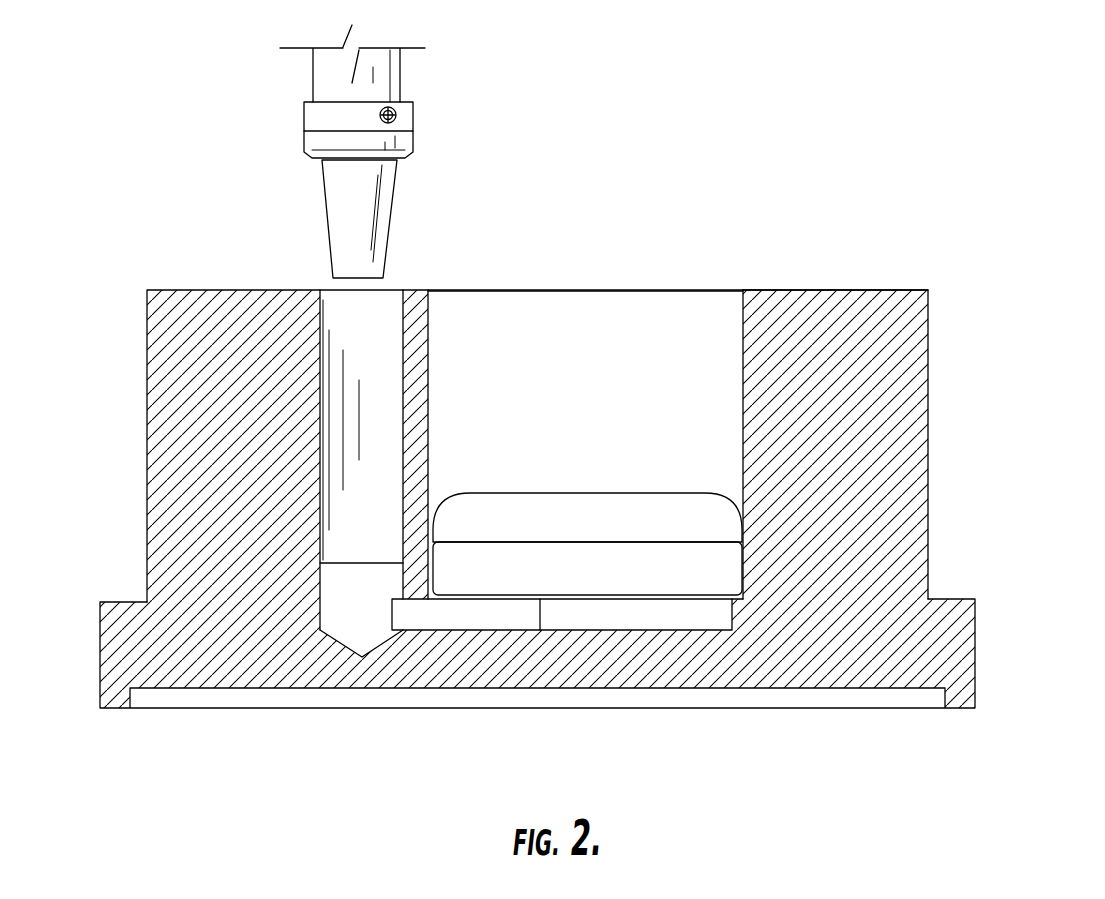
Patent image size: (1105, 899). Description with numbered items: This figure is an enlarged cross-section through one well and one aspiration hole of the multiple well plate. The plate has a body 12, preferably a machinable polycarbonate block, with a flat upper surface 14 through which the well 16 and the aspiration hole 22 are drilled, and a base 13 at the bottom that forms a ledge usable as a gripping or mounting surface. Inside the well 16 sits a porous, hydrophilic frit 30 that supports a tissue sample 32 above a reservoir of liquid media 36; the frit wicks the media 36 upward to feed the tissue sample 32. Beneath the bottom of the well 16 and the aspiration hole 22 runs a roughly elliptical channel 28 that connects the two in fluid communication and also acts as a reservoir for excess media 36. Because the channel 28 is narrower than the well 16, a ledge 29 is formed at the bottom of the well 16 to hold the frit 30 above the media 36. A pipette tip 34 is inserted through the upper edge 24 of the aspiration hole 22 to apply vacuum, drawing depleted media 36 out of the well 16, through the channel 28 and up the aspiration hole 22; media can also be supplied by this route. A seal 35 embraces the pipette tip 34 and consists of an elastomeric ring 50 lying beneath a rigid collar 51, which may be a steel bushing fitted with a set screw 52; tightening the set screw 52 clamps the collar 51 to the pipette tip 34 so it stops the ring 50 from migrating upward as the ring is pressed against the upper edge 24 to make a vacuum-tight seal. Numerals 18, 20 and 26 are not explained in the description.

The body 12 is at (907, 415).
The base 13 is at (975, 657).
The upper surface 14 is at (877, 290).
The well 16 is at (694, 306).
The top surface 18 is at (745, 290).
The cavity side wall 20 is at (745, 457).
The aspiration hole 22 is at (378, 365).
The upper edge 24 is at (320, 300).
The left side wall 26 is at (320, 465).
The channel 28 is at (490, 613).
The ledge 29 is at (740, 598).
The frit 30 is at (723, 570).
The tissue sample 32 is at (553, 505).
The pipette tip 34 is at (378, 212).
The seal 35 is at (402, 142).
The liquid media 36 is at (357, 618).
The elastomeric ring 50 is at (320, 142).
The rigid collar 51 is at (413, 117).
The set screw 52 is at (388, 106).